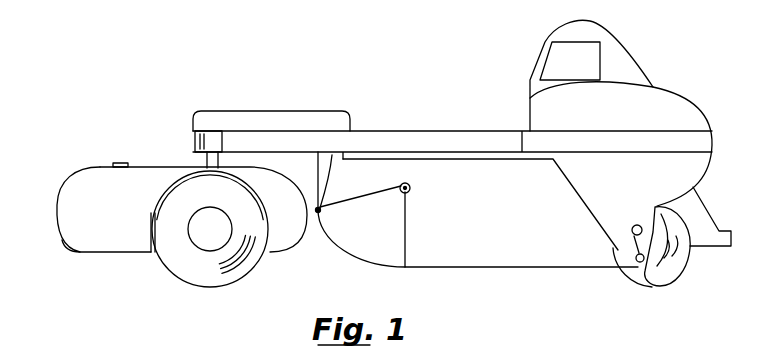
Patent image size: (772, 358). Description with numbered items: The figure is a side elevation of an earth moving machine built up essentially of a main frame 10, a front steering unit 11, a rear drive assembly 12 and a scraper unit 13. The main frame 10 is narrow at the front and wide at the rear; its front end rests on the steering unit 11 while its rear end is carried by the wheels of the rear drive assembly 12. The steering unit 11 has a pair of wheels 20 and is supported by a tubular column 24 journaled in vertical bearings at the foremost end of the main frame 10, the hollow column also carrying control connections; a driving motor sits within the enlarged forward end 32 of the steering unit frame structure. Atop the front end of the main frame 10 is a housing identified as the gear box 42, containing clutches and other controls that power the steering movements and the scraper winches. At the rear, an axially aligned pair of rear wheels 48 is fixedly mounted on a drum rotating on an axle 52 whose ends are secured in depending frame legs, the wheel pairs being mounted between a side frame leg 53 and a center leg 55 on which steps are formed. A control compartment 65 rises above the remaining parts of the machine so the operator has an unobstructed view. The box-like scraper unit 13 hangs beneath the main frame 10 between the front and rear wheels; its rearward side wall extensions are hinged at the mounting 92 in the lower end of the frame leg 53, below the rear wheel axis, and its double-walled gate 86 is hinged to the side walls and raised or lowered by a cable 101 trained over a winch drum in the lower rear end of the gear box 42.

The main frame 10 is at (417, 138).
The front steering unit 11 is at (126, 209).
The rear drive assembly 12 is at (642, 186).
The scraper unit 13 is at (485, 225).
The wheels 20 is at (180, 271).
The tubular column 24 is at (203, 165).
The enlarged forward end 32 is at (71, 245).
The gear box 42 is at (247, 119).
The pair of rear wheels 48 is at (667, 278).
The axles 52 is at (637, 230).
The side frame leg 53 is at (620, 248).
The center leg 55 is at (703, 246).
The control compartment 65 is at (583, 73).
The gate 86 is at (358, 245).
The hinge mounting 92 is at (640, 263).
The cable 101 is at (318, 172).